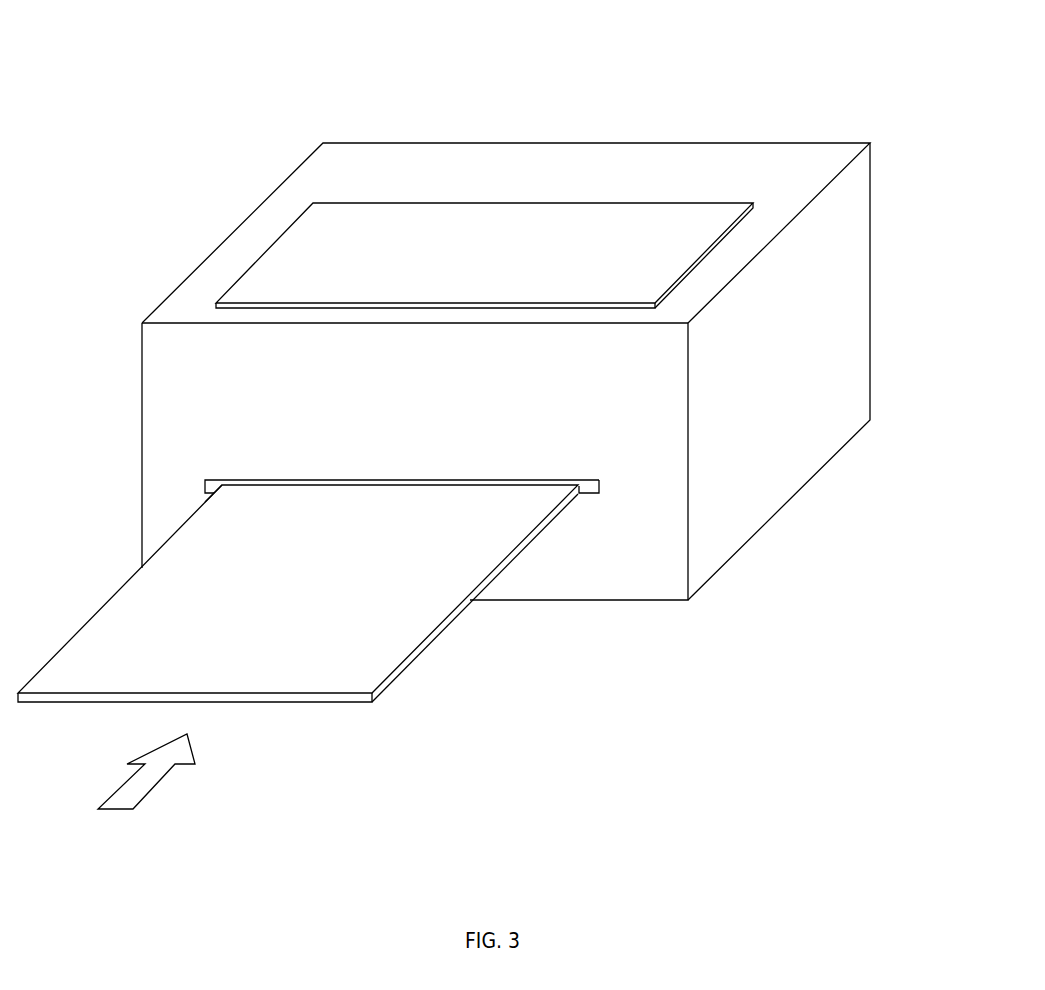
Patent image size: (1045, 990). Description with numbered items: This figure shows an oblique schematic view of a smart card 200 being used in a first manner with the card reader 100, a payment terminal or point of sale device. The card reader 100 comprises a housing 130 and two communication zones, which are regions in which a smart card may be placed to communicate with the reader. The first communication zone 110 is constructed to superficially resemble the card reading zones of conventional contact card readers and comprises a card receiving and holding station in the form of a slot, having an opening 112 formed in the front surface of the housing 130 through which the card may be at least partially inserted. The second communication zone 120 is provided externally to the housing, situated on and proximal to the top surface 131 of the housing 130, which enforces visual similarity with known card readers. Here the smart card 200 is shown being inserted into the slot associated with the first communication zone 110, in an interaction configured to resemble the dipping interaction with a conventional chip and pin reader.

The card reader 100 is at (259, 97).
The first communication zone 110 is at (579, 507).
The opening 112 is at (599, 490).
The second communication zone 120 is at (506, 193).
The housing 130 is at (730, 481).
The top surface 131 is at (233, 253).
The smart card 200 is at (371, 645).